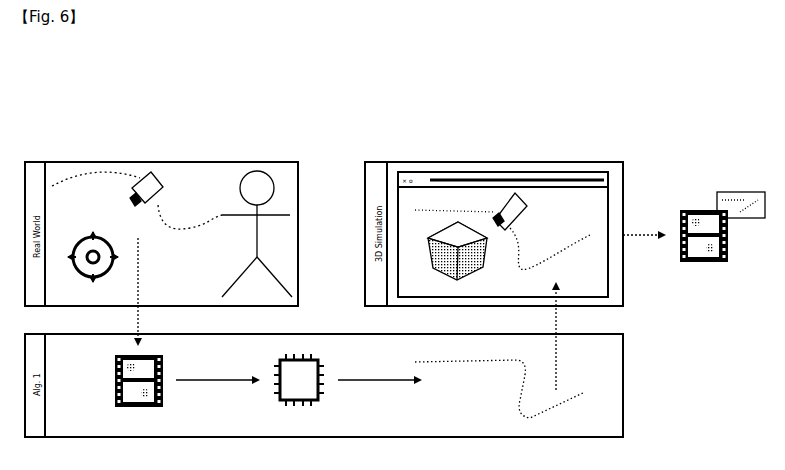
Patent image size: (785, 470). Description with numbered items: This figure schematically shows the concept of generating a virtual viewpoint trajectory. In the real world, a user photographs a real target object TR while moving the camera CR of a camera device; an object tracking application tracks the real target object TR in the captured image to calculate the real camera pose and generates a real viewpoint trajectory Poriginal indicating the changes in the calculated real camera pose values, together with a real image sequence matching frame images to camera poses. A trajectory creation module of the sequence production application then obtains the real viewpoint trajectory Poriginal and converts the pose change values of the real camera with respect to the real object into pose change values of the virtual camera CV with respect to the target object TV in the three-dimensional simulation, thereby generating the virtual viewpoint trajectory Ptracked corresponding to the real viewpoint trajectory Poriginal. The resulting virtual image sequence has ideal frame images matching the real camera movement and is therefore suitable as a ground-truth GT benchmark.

The camera CR is at (157, 189).
The virtual camera CV is at (517, 211).
The real target object TR is at (87, 257).
The target object TV is at (453, 252).
The ground-truth GT is at (722, 227).
The real viewpoint trajectory Poriginal is at (93, 184).
The virtual viewpoint trajectory Ptracked is at (450, 212).